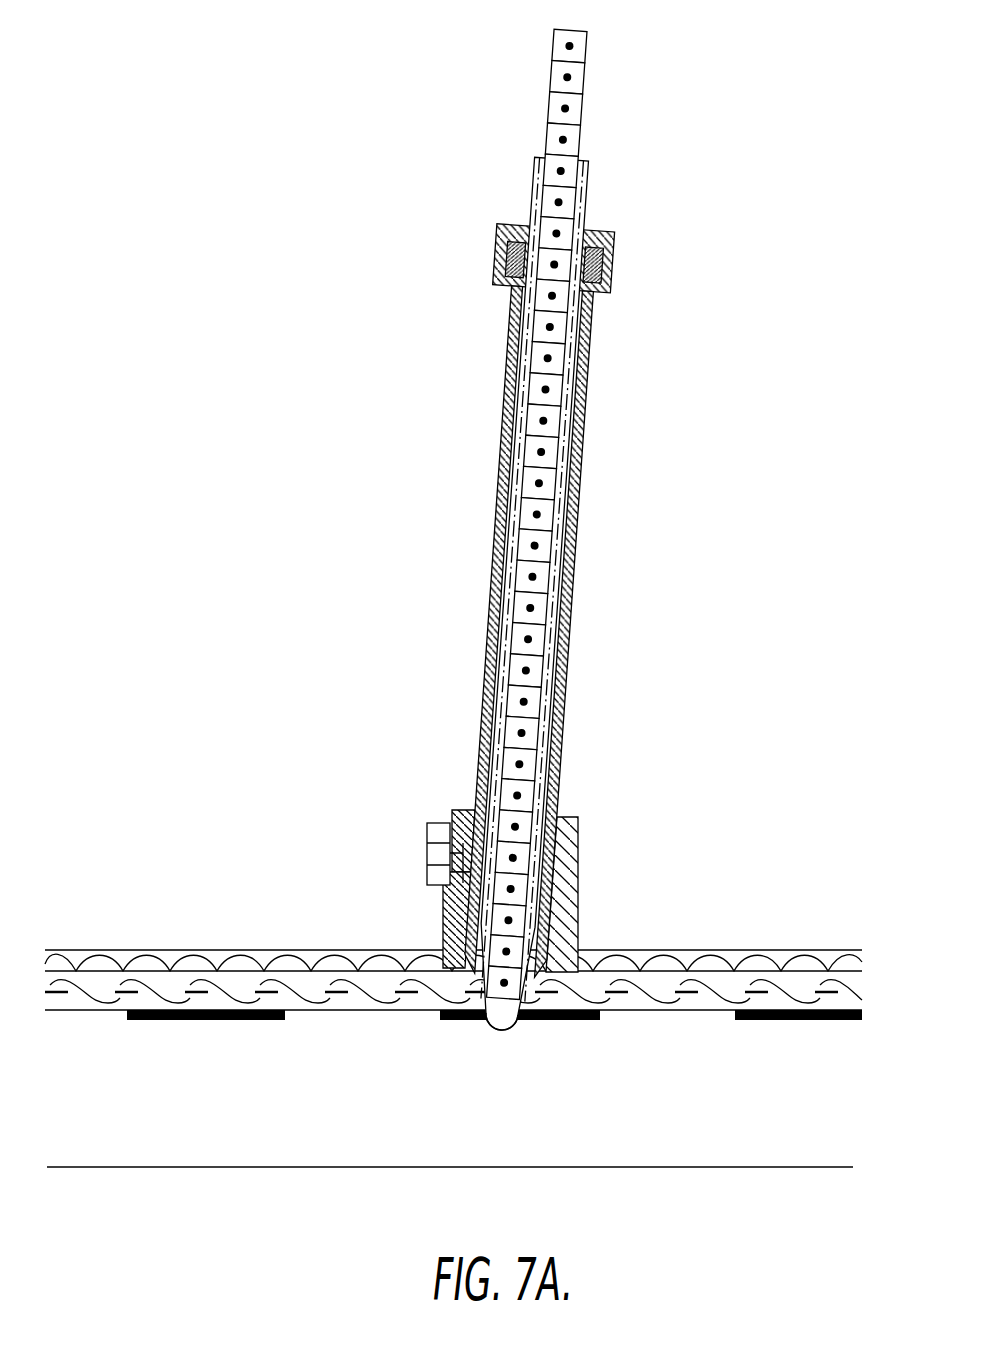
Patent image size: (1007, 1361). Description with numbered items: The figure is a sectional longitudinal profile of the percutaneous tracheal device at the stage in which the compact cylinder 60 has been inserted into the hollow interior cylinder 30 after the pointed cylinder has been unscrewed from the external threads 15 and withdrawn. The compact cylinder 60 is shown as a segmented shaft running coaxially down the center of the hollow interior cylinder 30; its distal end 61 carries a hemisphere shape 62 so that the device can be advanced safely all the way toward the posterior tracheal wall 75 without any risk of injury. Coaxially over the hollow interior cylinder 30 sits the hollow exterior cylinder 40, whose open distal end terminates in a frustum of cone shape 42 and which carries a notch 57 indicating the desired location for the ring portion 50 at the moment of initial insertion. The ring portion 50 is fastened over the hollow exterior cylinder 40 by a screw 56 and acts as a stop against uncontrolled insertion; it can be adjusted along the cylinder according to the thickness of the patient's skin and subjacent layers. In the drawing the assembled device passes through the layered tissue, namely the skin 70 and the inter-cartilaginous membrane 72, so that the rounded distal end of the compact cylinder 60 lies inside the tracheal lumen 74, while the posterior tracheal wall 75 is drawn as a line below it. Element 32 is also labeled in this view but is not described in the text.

The external threads 15 is at (561, 567).
The hollow interior cylinder 30 is at (531, 594).
The electrode strip 32 is at (462, 1020).
The hollow exterior cylinder 40 is at (530, 601).
The frustum of cone shape 42 is at (578, 937).
The ring portion 50 is at (441, 933).
The screw 56 is at (428, 847).
The notch 57 is at (460, 810).
The compact cylinder 60 is at (538, 498).
The distal end 61 is at (501, 1022).
The hemisphere shape 62 is at (504, 983).
The skin 70 is at (702, 950).
The inter-cartilaginous membrane 72 is at (786, 988).
The tracheal lumen 74 is at (825, 1086).
The posterior tracheal wall 75 is at (742, 1170).